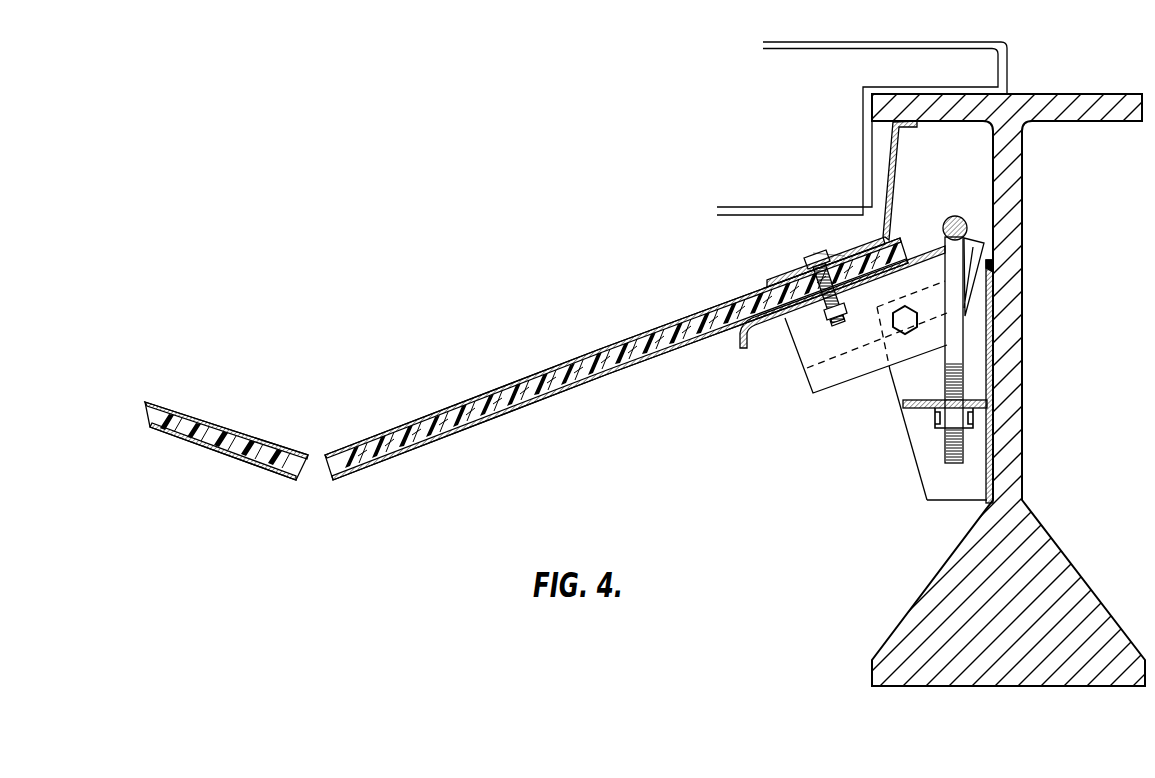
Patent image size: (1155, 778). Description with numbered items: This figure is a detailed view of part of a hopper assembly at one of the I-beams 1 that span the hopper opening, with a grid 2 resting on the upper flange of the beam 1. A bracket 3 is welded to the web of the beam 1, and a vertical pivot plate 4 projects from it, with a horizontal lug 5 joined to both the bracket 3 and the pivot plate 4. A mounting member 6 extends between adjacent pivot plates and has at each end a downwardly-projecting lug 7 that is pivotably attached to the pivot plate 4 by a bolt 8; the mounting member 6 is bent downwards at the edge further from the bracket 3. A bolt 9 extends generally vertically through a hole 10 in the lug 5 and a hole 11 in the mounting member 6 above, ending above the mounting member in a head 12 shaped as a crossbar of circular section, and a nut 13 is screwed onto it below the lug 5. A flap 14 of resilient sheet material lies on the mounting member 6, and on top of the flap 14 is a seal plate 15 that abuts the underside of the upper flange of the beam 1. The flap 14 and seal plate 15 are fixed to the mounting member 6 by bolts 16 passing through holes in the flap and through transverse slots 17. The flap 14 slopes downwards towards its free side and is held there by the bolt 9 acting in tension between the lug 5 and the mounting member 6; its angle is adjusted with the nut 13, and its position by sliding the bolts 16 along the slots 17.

The beam 1 is at (923, 620).
The grid 2 is at (1003, 73).
The bracket 3 is at (982, 483).
The pivot plate 4 is at (940, 483).
The horizontal lug 5 is at (923, 410).
The mounting member 6 is at (756, 348).
The lug 7 is at (823, 375).
The bolt 8 is at (905, 320).
The bolt 9 is at (957, 373).
The hole 10 is at (968, 401).
The hole 11 is at (970, 237).
The head 12 is at (953, 216).
The nut 13 is at (967, 422).
The flap 14 is at (268, 447).
The seal plate 15 is at (893, 177).
The bolt 16 is at (815, 252).
The transverse slot 17 is at (845, 256).